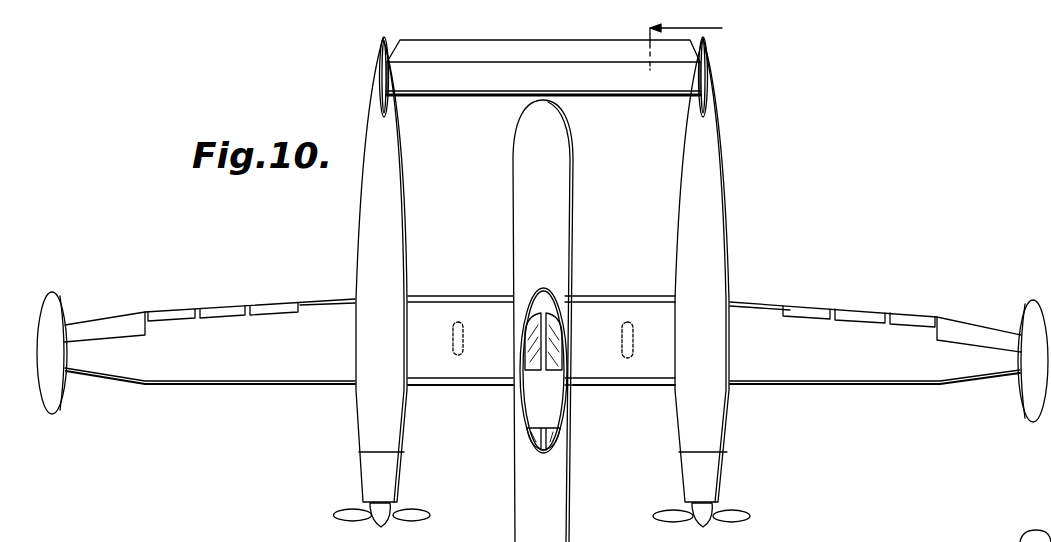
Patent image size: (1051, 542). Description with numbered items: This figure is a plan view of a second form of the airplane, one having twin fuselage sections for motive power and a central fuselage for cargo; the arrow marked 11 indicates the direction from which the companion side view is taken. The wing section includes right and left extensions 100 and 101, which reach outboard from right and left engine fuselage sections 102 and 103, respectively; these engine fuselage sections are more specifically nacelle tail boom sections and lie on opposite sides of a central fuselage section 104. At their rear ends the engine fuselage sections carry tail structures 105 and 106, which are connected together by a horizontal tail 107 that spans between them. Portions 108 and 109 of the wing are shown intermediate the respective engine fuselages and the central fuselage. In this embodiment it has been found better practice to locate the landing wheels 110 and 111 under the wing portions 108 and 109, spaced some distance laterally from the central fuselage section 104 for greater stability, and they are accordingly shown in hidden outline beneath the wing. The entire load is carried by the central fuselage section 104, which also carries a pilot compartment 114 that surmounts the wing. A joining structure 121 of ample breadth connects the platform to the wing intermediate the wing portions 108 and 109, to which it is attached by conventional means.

The view direction arrow for FIG. 11 is at (710, 47).
The right wing extension 100 is at (830, 385).
The left wing extension 101 is at (148, 378).
The right engine fuselage section 102 is at (725, 276).
The left engine fuselage section 103 is at (356, 266).
The central fuselage section 104 is at (575, 258).
The tail structure 105 is at (712, 82).
The tail structure 106 is at (383, 90).
The horizontal tail 107 is at (418, 92).
The wing portion 108 is at (610, 385).
The wing portion 109 is at (478, 377).
The landing wheel 110 is at (634, 335).
The landing wheel 111 is at (453, 338).
The pilot compartment 114 is at (537, 428).
The joining structure 121 is at (573, 313).